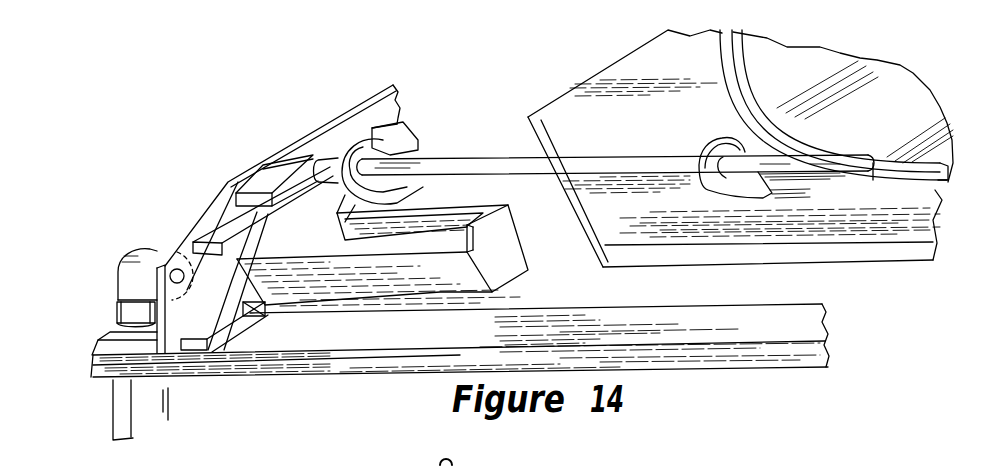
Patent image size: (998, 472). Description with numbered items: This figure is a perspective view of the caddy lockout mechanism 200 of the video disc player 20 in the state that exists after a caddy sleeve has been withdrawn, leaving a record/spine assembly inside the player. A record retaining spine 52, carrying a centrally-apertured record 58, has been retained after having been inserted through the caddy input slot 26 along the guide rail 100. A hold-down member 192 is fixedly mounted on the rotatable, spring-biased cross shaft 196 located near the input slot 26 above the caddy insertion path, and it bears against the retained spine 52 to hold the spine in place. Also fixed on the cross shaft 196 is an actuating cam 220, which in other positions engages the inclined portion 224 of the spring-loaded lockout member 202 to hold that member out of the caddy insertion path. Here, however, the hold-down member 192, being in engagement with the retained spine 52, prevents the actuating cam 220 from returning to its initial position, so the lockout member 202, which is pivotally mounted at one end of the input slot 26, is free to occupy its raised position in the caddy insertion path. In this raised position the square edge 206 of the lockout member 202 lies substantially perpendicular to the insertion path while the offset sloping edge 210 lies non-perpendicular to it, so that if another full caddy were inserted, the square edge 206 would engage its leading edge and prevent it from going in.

The video disc player 20 is at (945, 327).
The caddy input slot 26 is at (192, 308).
The record retaining spine 52 is at (567, 108).
The record 58 is at (893, 90).
The guide rail 100 is at (395, 160).
The hold-down member 192 is at (745, 184).
The cross shaft 196 is at (605, 157).
The caddy lockout mechanism 200 is at (445, 84).
The lockout member 202 is at (420, 277).
The square edge 206 is at (473, 243).
The offset sloping edge 210 is at (303, 182).
The actuating cam 220 is at (370, 110).
The inclined portion 224 is at (418, 192).